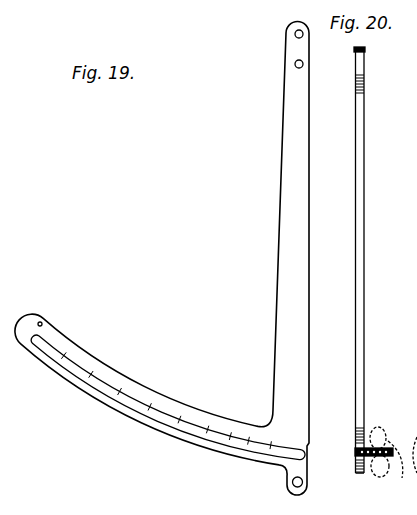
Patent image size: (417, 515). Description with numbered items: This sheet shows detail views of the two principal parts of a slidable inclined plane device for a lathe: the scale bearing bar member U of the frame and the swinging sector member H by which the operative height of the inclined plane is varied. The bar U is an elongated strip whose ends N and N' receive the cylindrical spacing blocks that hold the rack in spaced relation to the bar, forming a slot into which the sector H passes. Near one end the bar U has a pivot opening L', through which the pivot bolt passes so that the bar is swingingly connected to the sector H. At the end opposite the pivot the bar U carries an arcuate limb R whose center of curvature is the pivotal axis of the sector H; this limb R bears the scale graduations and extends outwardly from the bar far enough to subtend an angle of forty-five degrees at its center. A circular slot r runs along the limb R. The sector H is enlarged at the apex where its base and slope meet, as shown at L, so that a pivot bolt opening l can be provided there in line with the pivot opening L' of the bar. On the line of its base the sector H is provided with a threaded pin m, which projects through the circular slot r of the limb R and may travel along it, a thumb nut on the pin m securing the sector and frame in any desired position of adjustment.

In FIG. 19, the bar U is at (283, 215).
In FIG. 20, the bar U is at (412, 92).
In FIG. 19, the end of the bar N is at (281, 272).
In FIG. 19, the pivot opening L' is at (309, 77).
In FIG. 19, the circular slot r is at (138, 414).
In FIG. 19, the arcuate limb R is at (159, 392).
In FIG. 19, the end of the bar N' is at (65, 508).
In FIG. 20, the sector member H is at (365, 247).
In FIG. 20, the enlarged apex portion of the sector L is at (369, 58).
In FIG. 20, the pivot bolt opening l is at (374, 433).
In FIG. 20, the pin m is at (393, 461).